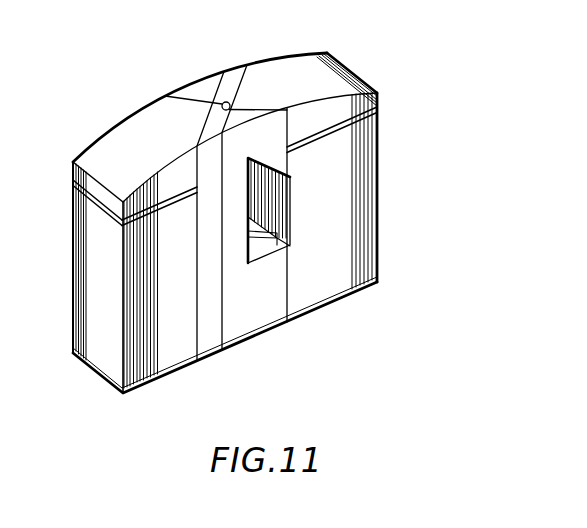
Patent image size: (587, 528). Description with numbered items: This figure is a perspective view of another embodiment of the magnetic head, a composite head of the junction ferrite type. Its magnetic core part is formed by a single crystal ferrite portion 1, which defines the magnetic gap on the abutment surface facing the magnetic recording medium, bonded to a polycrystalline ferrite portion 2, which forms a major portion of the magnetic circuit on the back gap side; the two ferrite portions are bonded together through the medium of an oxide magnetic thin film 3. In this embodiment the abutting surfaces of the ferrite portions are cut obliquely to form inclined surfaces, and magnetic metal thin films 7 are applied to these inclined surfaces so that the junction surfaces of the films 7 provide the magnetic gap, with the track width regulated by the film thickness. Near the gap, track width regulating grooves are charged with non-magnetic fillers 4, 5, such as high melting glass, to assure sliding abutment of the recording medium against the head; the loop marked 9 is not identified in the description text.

The single crystal ferrite portion 1 is at (132, 136).
The polycrystalline ferrite portion 2 is at (368, 207).
The oxide magnetic thin film 3 is at (378, 103).
The non-magnetic filler 4 is at (272, 320).
The non-magnetic filler 5 is at (212, 88).
The magnetic metal thin film 7 is at (233, 77).
The loop wire 9 is at (230, 103).